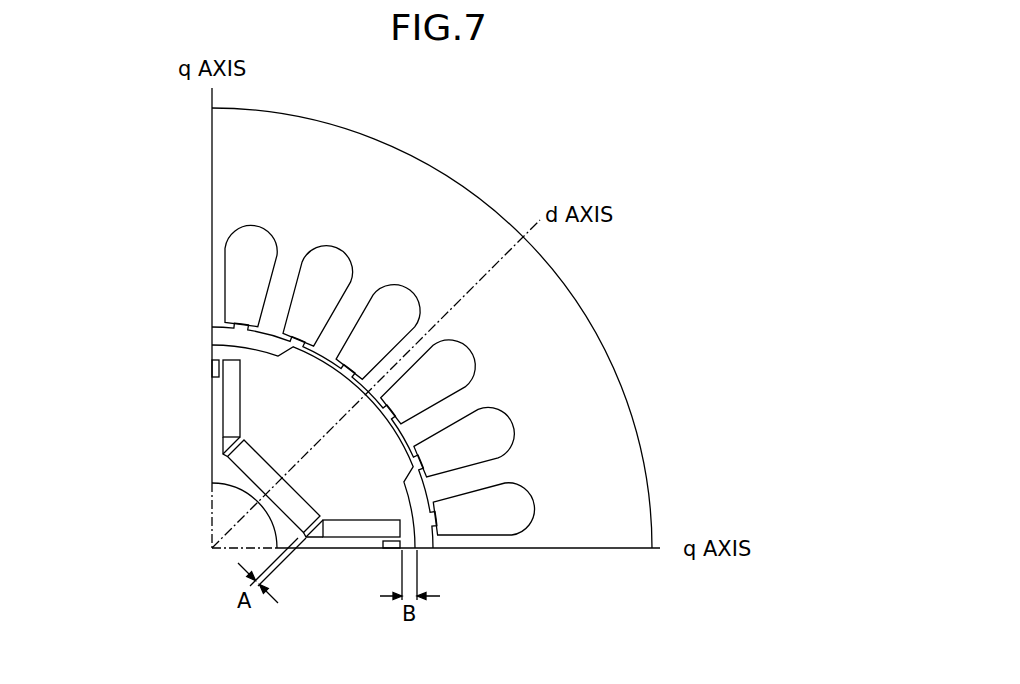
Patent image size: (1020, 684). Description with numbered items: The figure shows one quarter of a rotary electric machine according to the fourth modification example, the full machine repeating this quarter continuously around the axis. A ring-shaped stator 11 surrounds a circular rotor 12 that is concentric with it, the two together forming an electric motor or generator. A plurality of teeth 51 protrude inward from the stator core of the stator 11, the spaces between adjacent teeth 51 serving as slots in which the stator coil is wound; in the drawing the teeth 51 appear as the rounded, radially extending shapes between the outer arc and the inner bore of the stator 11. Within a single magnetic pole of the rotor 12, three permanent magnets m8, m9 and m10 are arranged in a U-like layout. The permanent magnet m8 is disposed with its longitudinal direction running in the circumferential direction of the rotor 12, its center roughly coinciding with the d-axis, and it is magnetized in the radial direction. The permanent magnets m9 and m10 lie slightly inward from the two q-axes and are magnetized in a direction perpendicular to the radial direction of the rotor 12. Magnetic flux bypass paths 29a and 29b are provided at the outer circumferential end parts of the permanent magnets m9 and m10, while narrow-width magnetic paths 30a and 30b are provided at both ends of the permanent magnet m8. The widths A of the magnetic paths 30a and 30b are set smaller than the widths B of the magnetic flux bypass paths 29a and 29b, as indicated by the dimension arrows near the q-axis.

The stator 11 is at (633, 289).
The rotor 12 is at (267, 428).
The teeth 51 is at (281, 289).
The magnetic flux bypass path 29a is at (223, 357).
The magnetic flux bypass path 29b is at (403, 545).
The narrow-width magnetic path 30a is at (224, 458).
The narrow-width magnetic path 30b is at (316, 540).
The permanent magnet m8 is at (242, 482).
The permanent magnet m9 is at (232, 393).
The permanent magnet m10 is at (355, 528).